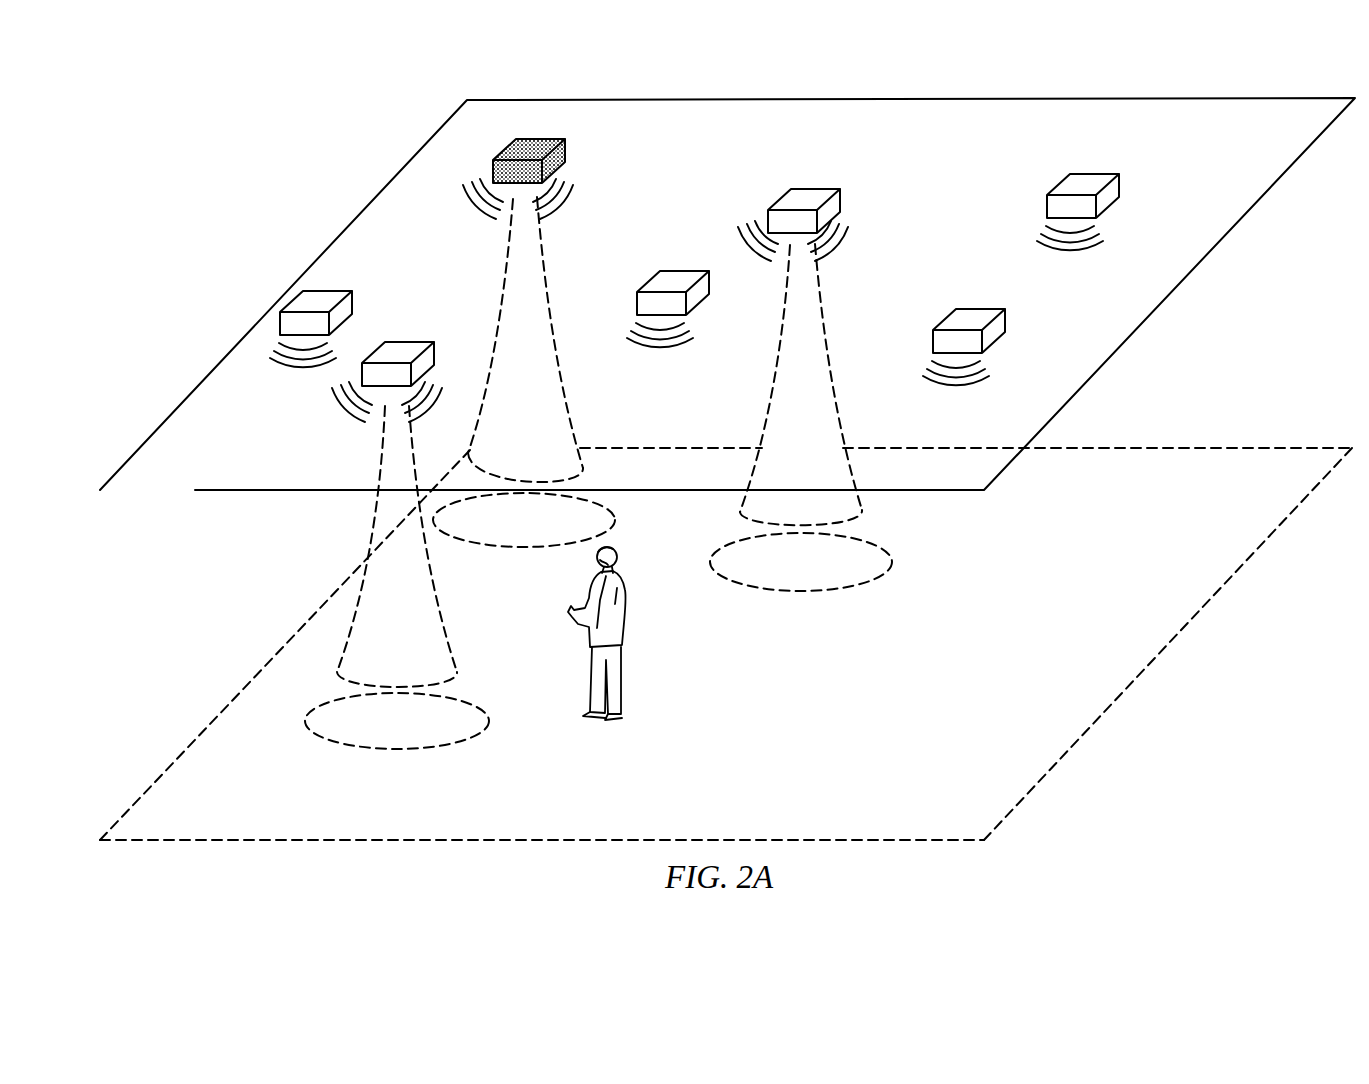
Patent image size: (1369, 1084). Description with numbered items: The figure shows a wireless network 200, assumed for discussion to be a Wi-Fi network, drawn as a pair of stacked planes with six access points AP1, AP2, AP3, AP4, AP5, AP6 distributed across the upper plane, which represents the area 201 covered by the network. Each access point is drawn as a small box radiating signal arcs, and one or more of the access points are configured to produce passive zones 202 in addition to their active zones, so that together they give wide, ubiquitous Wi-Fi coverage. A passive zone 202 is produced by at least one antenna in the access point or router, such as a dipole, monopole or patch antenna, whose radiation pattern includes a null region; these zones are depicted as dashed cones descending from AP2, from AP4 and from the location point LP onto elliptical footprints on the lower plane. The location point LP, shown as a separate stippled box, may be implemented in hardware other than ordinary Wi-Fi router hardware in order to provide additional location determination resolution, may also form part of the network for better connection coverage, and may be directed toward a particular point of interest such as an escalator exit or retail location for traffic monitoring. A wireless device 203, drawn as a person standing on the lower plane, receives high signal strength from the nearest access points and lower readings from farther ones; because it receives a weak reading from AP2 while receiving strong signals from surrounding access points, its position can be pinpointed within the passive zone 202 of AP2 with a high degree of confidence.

The wireless network 200 is at (262, 148).
The area 201 is at (1236, 226).
The passive zone 202 is at (509, 275).
The wireless device 203 is at (568, 614).
The location point LP is at (518, 167).
The access point AP1 is at (311, 318).
The access point AP2 is at (387, 371).
The access point AP3 is at (668, 298).
The access point AP4 is at (793, 213).
The access point AP5 is at (964, 336).
The access point AP6 is at (1078, 200).